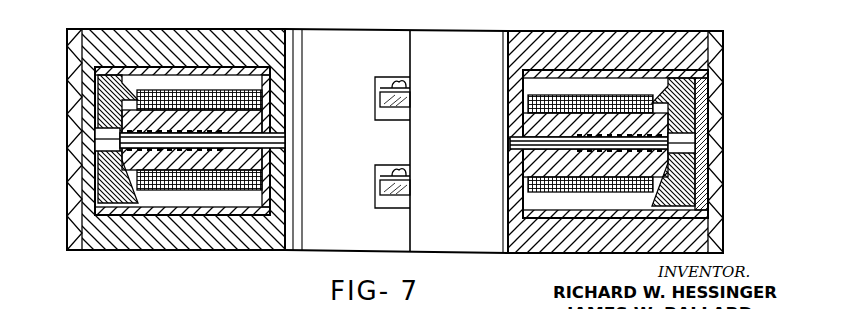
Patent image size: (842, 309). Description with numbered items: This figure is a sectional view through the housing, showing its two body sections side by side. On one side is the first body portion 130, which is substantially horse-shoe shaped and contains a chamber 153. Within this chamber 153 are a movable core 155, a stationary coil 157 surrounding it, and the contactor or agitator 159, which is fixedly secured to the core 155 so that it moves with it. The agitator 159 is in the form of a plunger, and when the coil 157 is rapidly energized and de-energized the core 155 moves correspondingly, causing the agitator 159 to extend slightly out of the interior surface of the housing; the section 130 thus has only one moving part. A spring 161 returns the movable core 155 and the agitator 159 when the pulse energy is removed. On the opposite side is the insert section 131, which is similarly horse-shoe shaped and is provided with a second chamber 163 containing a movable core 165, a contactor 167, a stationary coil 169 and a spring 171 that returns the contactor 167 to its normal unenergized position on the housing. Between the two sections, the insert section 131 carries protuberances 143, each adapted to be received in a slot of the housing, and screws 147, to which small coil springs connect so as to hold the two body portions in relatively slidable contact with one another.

The first body portion 130 is at (252, 35).
The insert section 131 is at (583, 38).
The protuberances 143 is at (407, 98).
The screws 147 is at (408, 82).
The chamber 153 is at (157, 198).
The movable core 155 is at (107, 181).
The stationary coil 157 is at (142, 102).
The contactor or agitator 159 is at (285, 140).
The spring 161 is at (180, 128).
The second chamber 163 is at (657, 93).
The movable core 165 is at (680, 184).
The contactor 167 is at (512, 142).
The stationary coil 169 is at (647, 97).
The spring 171 is at (627, 127).